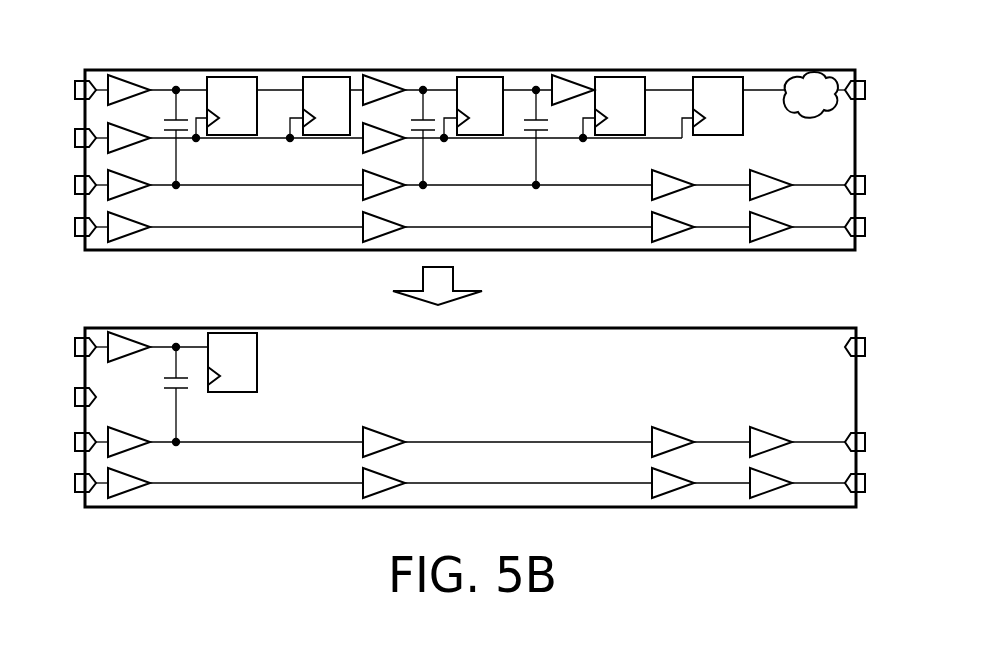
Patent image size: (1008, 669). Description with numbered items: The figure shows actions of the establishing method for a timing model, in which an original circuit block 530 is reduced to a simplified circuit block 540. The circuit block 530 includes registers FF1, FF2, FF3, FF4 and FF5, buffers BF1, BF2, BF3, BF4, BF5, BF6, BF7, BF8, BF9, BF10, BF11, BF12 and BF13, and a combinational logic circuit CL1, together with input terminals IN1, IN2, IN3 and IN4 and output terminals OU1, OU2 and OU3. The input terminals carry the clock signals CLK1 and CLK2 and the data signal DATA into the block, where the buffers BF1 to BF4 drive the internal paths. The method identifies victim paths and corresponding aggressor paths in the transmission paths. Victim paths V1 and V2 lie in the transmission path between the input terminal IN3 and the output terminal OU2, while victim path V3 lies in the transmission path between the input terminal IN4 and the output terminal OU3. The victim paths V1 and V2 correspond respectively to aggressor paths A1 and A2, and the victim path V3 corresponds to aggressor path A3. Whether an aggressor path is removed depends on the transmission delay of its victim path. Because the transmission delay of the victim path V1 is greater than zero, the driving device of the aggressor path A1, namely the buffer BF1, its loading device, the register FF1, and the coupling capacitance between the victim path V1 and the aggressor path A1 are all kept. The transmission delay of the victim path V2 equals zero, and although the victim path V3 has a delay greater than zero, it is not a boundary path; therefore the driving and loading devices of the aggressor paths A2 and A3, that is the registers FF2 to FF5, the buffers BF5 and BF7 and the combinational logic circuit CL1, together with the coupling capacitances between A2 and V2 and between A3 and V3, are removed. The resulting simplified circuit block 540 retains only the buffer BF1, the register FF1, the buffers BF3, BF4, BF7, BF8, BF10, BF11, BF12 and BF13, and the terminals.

The input terminal IN1 is at (79, 80).
The input terminal IN2 is at (77, 129).
The input terminal IN3 is at (78, 176).
The input terminal IN4 is at (78, 237).
The first clock signal CLK1 is at (69, 267).
The second clock signal CLK2 is at (69, 355).
The data signal DATA is at (69, 314).
The buffer BF1 is at (130, 77).
The buffer BF2 is at (133, 131).
The buffer BF3 is at (133, 306).
The buffer BF4 is at (133, 346).
The buffer BF5 is at (385, 79).
The buffer BF6 is at (384, 130).
The buffer BF7 is at (364, 309).
The buffer BF8 is at (364, 350).
The buffer BF9 is at (573, 78).
The buffer BF10 is at (670, 175).
The buffer BF11 is at (670, 217).
The buffer BF12 is at (770, 175).
The buffer BF13 is at (770, 217).
The register FF1 is at (233, 83).
The register FF2 is at (327, 83).
The register FF3 is at (488, 83).
The register FF4 is at (625, 83).
The register FF5 is at (717, 83).
The combinational logic circuit CL1 is at (812, 78).
The output terminal OU1 is at (866, 87).
The output terminal OU2 is at (866, 183).
The output terminal OU3 is at (866, 225).
The aggressor path A1 is at (188, 212).
The aggressor path A2 is at (525, 82).
The aggressor path A3 is at (428, 202).
The victim path V1 is at (182, 329).
The victim path V2 is at (543, 202).
The victim path V3 is at (434, 82).
The circuit block 530 is at (855, 140).
The simplified circuit block 540 is at (856, 398).